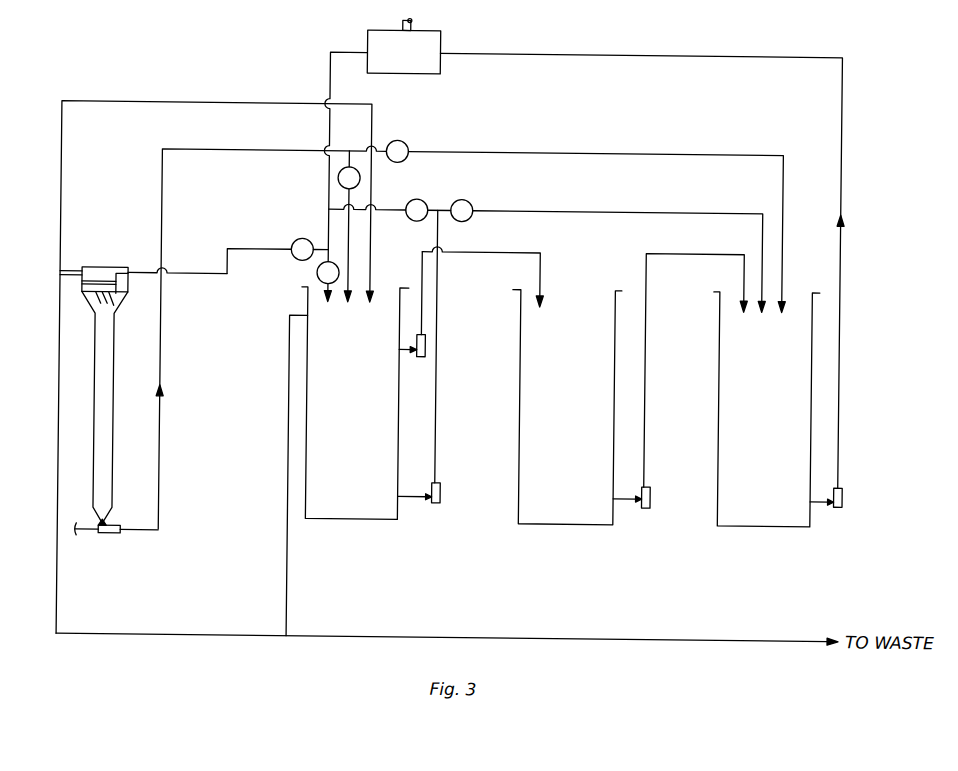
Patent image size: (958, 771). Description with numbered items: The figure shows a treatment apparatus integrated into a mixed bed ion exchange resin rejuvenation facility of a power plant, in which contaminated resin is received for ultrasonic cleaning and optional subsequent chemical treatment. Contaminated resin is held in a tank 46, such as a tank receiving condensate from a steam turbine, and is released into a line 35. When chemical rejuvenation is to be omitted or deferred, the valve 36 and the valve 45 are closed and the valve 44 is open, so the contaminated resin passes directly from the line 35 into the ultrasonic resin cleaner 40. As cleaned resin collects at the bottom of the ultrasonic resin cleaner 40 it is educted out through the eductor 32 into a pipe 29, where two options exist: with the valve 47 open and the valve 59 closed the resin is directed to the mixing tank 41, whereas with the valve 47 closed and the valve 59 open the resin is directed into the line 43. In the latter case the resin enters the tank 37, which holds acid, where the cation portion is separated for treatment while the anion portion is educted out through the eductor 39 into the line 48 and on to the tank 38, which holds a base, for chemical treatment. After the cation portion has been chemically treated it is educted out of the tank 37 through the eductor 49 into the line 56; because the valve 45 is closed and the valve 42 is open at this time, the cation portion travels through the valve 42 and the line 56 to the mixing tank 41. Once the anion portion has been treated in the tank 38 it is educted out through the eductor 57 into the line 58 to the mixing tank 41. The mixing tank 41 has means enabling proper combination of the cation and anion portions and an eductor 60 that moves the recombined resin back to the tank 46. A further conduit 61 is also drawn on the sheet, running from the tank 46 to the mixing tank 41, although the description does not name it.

The tank 46 is at (413, 65).
The line 35 is at (325, 80).
The pipe 29 is at (240, 150).
The valve 47 is at (408, 144).
The valve 59 is at (336, 179).
The line 43 is at (350, 194).
The valve 45 is at (425, 200).
The valve 42 is at (473, 204).
The line 56 is at (638, 208).
The conduit 61 is at (840, 191).
The valve 44 is at (290, 244).
The valve 36 is at (316, 278).
The line 48 is at (485, 252).
The line 58 is at (684, 252).
The tank 37 is at (307, 462).
The eductor 39 is at (426, 342).
The eductor 49 is at (438, 505).
The tank 38 is at (520, 444).
The eductor 57 is at (654, 498).
The mixing tank 41 is at (812, 401).
The eductor 60 is at (846, 493).
The ultrasonic resin cleaner 40 is at (114, 424).
The eductor 32 is at (110, 539).